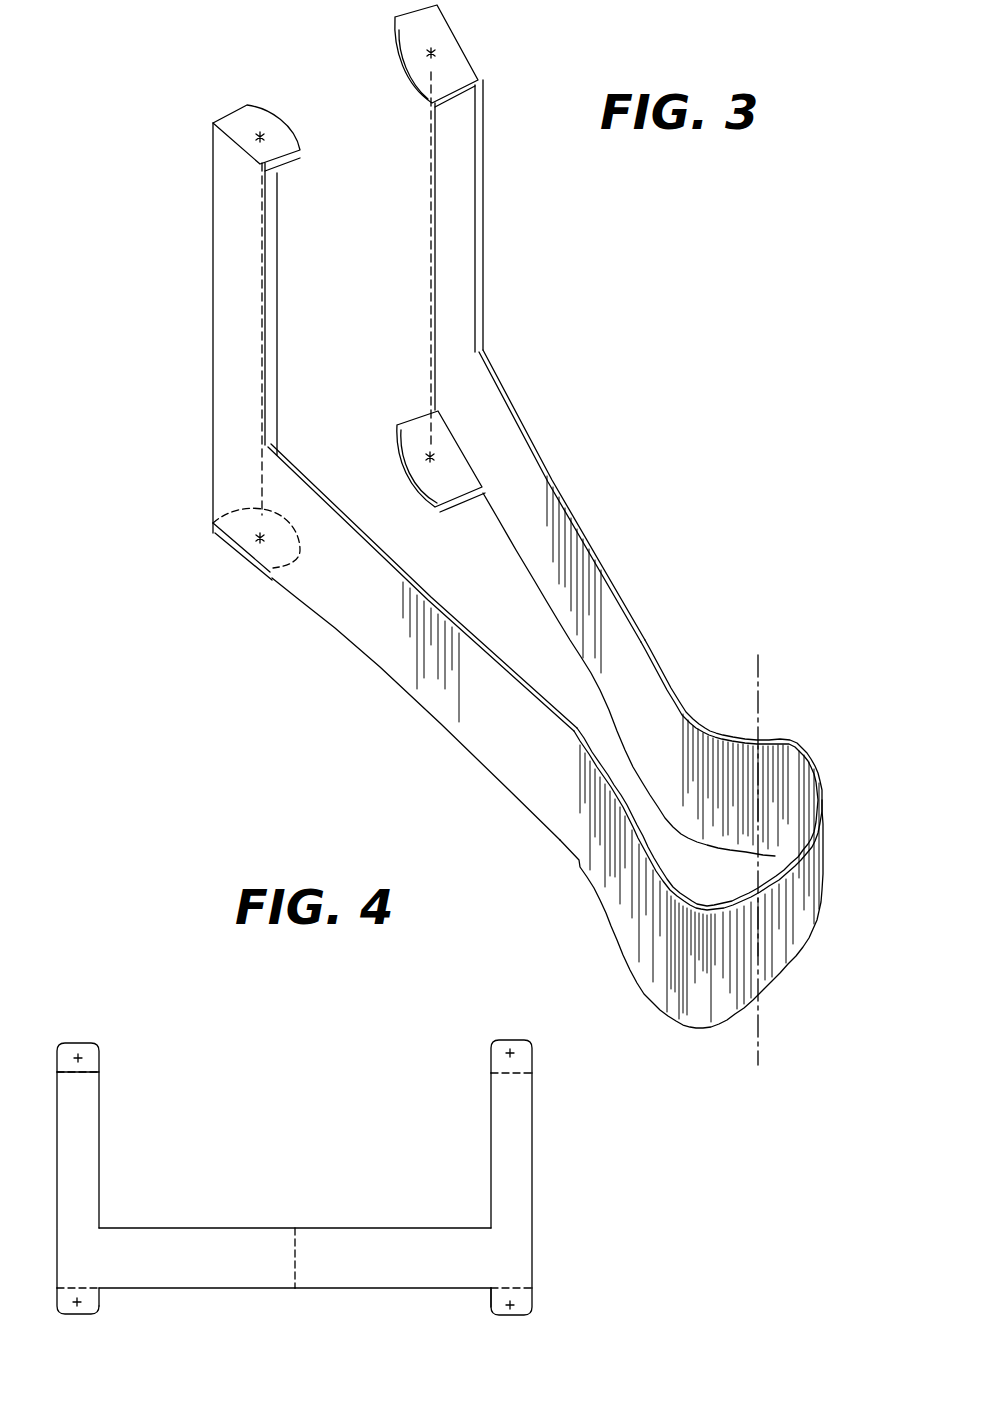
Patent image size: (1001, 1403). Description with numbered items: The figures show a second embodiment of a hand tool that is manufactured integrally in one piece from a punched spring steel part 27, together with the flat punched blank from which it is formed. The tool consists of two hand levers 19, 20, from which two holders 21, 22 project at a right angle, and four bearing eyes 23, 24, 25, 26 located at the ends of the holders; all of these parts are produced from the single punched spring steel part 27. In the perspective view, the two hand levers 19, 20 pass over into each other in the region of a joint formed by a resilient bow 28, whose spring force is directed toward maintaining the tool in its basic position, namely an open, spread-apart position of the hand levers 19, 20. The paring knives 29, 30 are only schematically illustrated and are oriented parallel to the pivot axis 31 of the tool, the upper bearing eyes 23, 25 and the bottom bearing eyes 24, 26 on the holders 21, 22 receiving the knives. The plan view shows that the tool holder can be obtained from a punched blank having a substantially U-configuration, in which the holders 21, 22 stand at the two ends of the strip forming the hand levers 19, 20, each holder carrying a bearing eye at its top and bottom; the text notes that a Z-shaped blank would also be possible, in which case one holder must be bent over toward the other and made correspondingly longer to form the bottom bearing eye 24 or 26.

In FIG. 3, the hand lever 19 is at (608, 613).
In FIG. 4, the hand lever 19 is at (403, 1277).
In FIG. 3, the hand lever 20 is at (392, 683).
In FIG. 4, the hand lever 20 is at (165, 1275).
In FIG. 3, the holder 21 is at (218, 292).
In FIG. 4, the holder 21 is at (92, 1147).
In FIG. 3, the holder 22 is at (462, 250).
In FIG. 4, the holder 22 is at (497, 1157).
In FIG. 3, the bearing eye 23 is at (213, 122).
In FIG. 4, the bearing eye 23 is at (100, 1052).
In FIG. 3, the bearing eye 24 is at (290, 582).
In FIG. 4, the bearing eye 24 is at (85, 1310).
In FIG. 3, the bearing eye 25 is at (453, 60).
In FIG. 4, the bearing eye 25 is at (495, 1058).
In FIG. 3, the bearing eye 26 is at (410, 437).
In FIG. 4, the bearing eye 26 is at (495, 1305).
In FIG. 4, the punched spring steel part 27 is at (212, 1223).
In FIG. 3, the resilient bow 28 is at (787, 871).
In FIG. 3, the paring knife 29 is at (268, 248).
In FIG. 3, the paring knife 30 is at (430, 307).
In FIG. 3, the pivot axis 31 is at (757, 708).